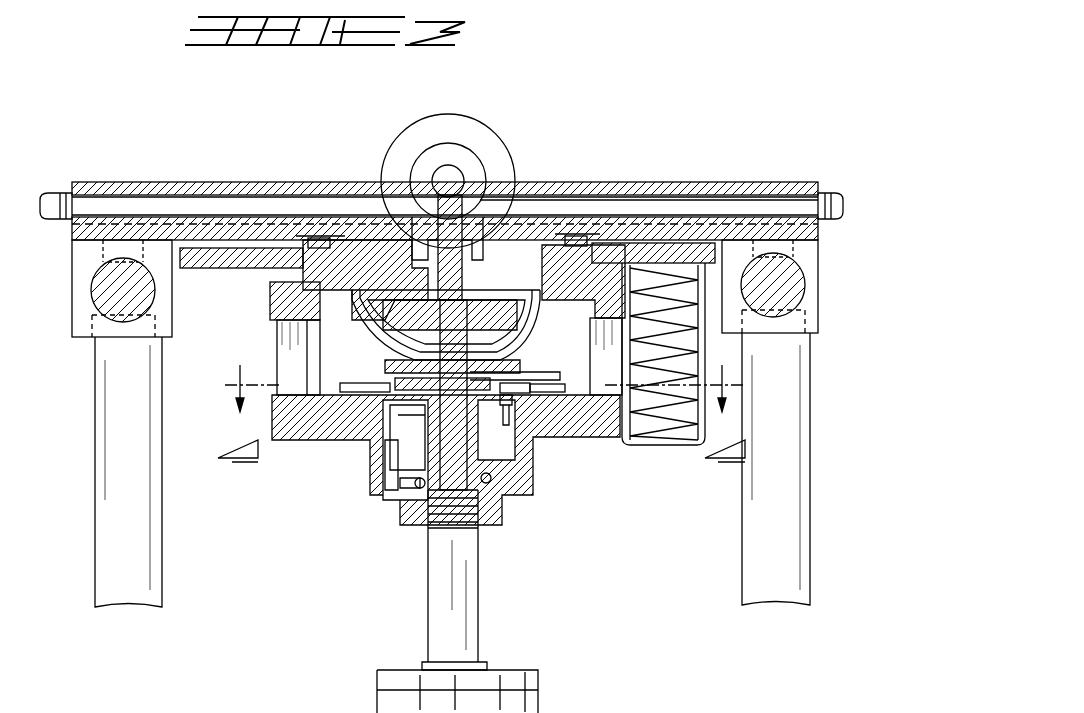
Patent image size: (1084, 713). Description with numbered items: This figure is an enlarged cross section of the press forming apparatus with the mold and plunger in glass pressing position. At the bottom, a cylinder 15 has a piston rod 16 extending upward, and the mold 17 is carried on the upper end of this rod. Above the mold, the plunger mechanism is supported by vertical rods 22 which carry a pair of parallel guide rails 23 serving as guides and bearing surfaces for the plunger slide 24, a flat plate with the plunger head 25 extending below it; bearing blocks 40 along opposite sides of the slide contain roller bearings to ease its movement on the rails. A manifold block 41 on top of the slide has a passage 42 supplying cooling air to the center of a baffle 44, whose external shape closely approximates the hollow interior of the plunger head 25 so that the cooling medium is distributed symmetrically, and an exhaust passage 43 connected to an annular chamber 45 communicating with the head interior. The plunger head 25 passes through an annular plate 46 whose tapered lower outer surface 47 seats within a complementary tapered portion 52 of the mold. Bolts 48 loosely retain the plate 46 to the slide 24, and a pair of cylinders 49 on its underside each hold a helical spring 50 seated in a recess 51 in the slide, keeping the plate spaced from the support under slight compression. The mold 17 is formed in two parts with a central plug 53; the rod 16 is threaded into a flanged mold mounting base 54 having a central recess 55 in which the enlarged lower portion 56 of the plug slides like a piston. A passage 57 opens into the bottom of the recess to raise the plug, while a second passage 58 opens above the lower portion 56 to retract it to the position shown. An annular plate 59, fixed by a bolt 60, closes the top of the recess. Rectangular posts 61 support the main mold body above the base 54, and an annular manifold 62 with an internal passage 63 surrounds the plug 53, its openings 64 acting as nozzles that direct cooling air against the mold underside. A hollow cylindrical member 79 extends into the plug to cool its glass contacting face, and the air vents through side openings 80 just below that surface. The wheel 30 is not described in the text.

The cylinder 15 is at (380, 696).
The piston rod 16 is at (440, 586).
The mold 17 is at (280, 300).
The vertical rod 22 is at (100, 398).
The guide rail 23 is at (100, 292).
The plunger slide 24 is at (82, 232).
The plunger head 25 is at (383, 350).
The wheel 30 is at (463, 130).
The bearing block 40 is at (82, 315).
The manifold block 41 is at (215, 185).
The passage 42 is at (152, 197).
The exhaust passage 43 is at (648, 192).
The baffle 44 is at (372, 330).
The annular chamber 45 is at (480, 292).
The annular plate 46 is at (218, 265).
The tapered lower outer surface 47 is at (303, 282).
The bolt 48 is at (318, 238).
The cylinder 49 is at (688, 447).
The helical spring 50 is at (660, 440).
The recess 51 is at (716, 200).
The tapered portion 52 is at (305, 316).
The plug 53 is at (512, 372).
The mold mounting base 54 is at (385, 468).
The central recess 55 is at (400, 430).
The lower portion 56 is at (498, 445).
The passage 57 is at (492, 478).
The second passage 58 is at (412, 500).
The annular plate 59 is at (378, 420).
The bolt 60 is at (520, 425).
The rectangular post 61 is at (287, 335).
The annular manifold 62 is at (528, 390).
The passage 63 is at (330, 420).
The opening 64 is at (372, 376).
The hollow cylindrical member 79 is at (405, 482).
The side opening 80 is at (400, 383).